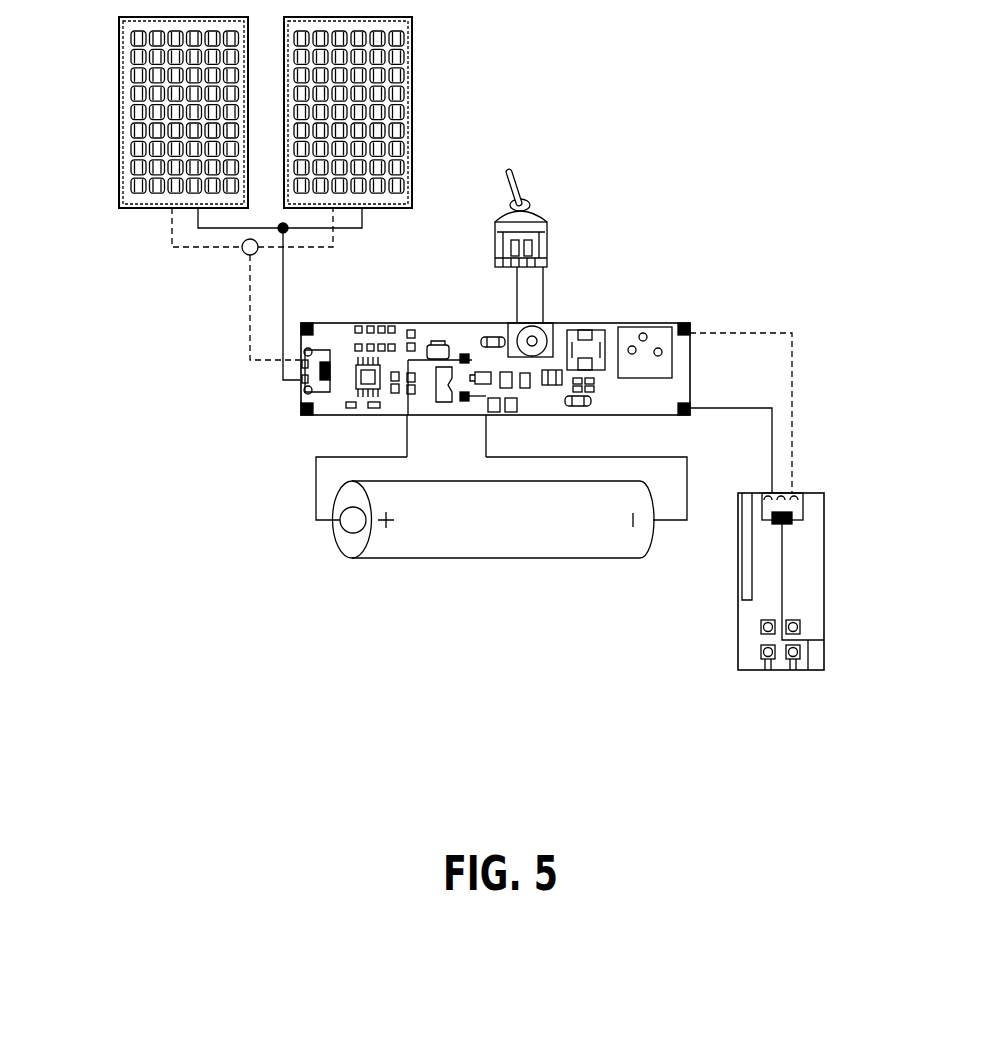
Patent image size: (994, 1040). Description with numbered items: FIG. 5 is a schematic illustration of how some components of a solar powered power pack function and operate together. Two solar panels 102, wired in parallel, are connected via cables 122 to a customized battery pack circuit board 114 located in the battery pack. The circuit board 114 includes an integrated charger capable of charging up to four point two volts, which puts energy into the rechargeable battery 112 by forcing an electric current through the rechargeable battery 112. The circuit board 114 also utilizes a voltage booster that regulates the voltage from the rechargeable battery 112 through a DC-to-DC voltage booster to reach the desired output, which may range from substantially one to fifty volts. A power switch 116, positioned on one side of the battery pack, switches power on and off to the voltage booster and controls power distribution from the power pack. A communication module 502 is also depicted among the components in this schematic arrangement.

The solar panels 102 is at (140, 93).
The rechargeable battery 112 is at (430, 565).
The battery pack circuit board 114 is at (318, 422).
The power switch 116 is at (530, 195).
The cables 122 is at (232, 310).
The communication module 502 is at (838, 575).